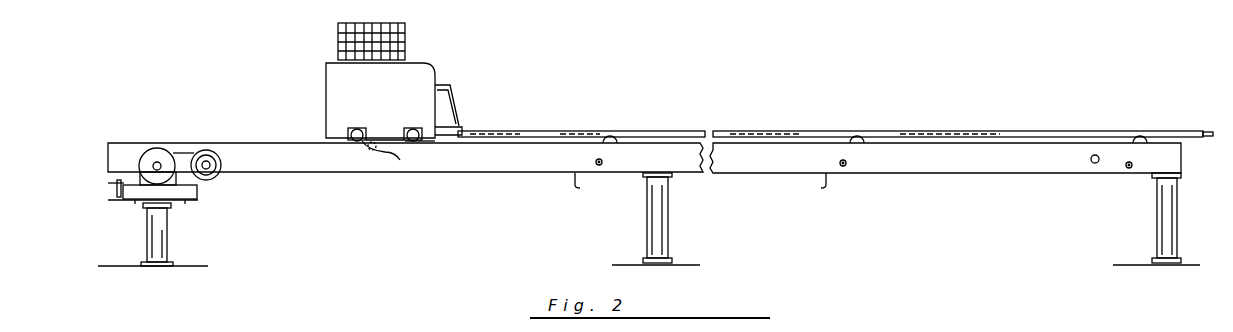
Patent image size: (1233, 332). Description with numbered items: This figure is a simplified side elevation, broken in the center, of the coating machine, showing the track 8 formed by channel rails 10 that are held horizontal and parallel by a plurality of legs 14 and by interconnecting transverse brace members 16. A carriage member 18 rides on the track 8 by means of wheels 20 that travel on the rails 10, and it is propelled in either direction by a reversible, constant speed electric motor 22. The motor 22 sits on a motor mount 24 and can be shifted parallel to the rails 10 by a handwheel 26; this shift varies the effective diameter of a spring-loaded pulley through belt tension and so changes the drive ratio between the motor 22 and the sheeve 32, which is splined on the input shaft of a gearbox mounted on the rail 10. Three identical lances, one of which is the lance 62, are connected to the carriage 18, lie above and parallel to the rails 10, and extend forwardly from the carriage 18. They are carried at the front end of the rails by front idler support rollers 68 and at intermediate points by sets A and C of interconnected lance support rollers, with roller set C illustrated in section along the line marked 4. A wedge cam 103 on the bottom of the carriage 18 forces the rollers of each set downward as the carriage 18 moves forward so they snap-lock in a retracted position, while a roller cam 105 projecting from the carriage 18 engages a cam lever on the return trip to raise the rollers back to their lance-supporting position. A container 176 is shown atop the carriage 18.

The channel rail 10 is at (493, 158).
The leg 14 is at (160, 250).
The transverse brace member 16 is at (580, 188).
The carriage member 18 is at (428, 82).
The wheel 20 is at (400, 160).
The electric motor 22 is at (153, 155).
The motor mount 24 is at (192, 192).
The handwheel 26 is at (116, 187).
The sheeve 32 is at (212, 172).
The lance 62 is at (548, 131).
The track 8 is at (660, 143).
The front idler support roller 68 is at (1140, 142).
The wedge cam 103 is at (422, 142).
The roller cam 105 is at (372, 150).
The container / drum 176 is at (405, 45).
The roller set A is at (610, 142).
The roller set C is at (858, 142).
The section line 4- 4 is at (897, 90).